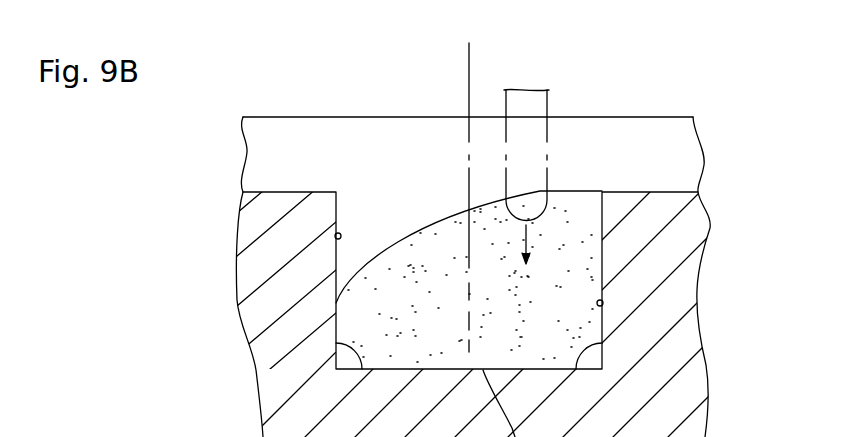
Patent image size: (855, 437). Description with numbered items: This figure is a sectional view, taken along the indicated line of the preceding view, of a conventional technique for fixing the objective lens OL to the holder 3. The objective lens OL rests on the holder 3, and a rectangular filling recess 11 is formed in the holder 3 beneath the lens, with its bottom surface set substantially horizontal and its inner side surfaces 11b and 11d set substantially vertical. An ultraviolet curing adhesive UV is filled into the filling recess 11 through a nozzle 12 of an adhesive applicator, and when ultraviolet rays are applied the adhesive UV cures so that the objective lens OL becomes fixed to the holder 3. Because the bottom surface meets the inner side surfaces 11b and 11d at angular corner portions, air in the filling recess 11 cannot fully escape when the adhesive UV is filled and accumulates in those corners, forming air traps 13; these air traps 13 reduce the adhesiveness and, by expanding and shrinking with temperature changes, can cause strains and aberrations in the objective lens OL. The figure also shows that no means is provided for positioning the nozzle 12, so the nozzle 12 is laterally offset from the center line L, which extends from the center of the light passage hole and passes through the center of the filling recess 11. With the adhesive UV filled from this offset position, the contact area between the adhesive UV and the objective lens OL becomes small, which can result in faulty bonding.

The holder 3 is at (673, 230).
The filling recess 11 is at (362, 183).
The inner side surface 11b is at (604, 305).
The inner side surface 11d is at (334, 239).
The nozzle 12 is at (533, 105).
The air trap 13 is at (345, 357).
The center line L is at (466, 82).
The ultraviolet curing adhesive UV is at (441, 247).
The objective lens OL is at (652, 137).